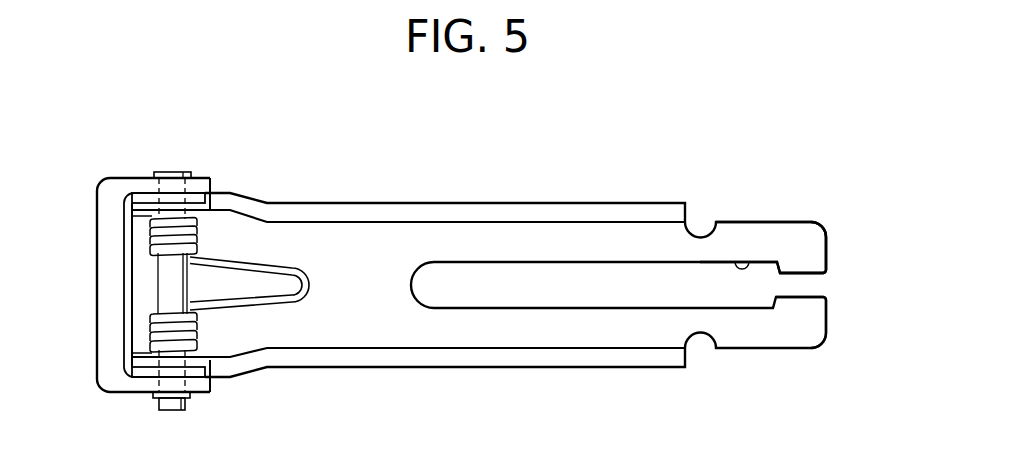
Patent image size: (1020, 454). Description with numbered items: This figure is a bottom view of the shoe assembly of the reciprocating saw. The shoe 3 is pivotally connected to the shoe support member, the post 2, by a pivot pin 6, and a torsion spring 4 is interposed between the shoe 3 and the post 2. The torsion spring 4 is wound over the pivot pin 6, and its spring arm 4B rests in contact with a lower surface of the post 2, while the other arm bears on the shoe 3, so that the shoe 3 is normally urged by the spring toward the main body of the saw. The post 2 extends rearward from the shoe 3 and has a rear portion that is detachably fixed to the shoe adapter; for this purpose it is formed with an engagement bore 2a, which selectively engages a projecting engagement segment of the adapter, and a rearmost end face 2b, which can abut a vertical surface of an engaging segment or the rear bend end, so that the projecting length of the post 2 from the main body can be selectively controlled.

The post 2 is at (421, 221).
The engagement bore 2a is at (755, 262).
The rearmost end face 2b is at (826, 247).
The shoe 3 is at (108, 335).
The torsion spring 4 is at (195, 342).
The spring arm 4B is at (279, 266).
The pivot pin 6 is at (172, 200).